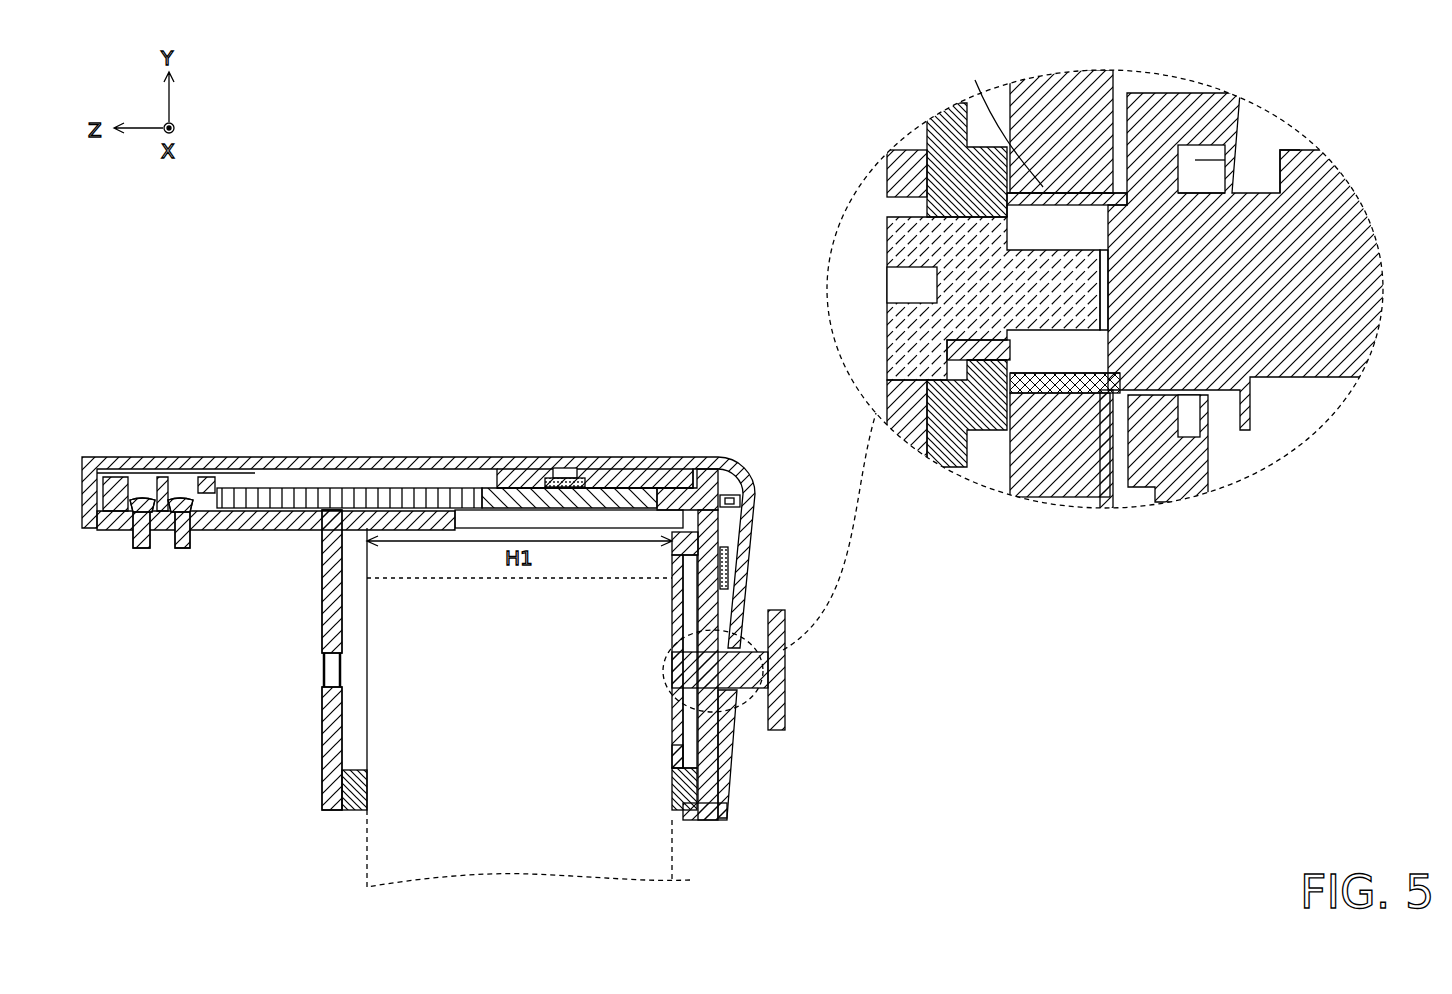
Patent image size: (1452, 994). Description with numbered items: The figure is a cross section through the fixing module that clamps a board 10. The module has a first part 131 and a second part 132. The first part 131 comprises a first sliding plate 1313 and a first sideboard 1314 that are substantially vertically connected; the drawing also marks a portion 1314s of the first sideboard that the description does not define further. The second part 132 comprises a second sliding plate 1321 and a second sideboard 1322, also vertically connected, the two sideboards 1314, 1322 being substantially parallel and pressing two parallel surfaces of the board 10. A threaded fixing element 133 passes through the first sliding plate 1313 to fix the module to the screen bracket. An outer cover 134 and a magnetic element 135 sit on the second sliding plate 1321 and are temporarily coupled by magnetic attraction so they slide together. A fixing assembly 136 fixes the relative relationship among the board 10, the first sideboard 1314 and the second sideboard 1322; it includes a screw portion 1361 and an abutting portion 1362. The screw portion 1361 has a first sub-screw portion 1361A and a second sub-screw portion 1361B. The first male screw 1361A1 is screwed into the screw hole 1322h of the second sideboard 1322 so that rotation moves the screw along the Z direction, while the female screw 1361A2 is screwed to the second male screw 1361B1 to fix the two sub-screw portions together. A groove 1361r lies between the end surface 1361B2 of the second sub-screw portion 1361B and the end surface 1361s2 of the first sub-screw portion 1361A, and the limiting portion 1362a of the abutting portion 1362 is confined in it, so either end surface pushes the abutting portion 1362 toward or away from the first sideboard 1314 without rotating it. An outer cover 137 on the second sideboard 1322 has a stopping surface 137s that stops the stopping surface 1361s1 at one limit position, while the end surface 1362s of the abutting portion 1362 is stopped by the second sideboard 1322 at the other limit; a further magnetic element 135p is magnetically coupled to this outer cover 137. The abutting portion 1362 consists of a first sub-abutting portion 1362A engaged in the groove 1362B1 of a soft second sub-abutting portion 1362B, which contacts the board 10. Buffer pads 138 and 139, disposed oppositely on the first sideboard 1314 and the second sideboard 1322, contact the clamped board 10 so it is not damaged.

The board 10 is at (693, 878).
The first part 131 is at (245, 712).
The second part 132 is at (756, 779).
The fixing element 133 is at (186, 548).
The outer cover 134 is at (646, 470).
The magnetic element 135 is at (564, 478).
The magnetic element 135p is at (727, 565).
The fixing assembly 136 is at (1043, 390).
The outer cover 137 is at (728, 790).
The stopping surface 137s is at (1195, 160).
The buffer pad 138 is at (353, 797).
The buffer pad 139 is at (681, 794).
The first sliding plate 1313 is at (281, 512).
The first sideboard 1314 is at (332, 610).
The slot of vertical plate portion 1314s is at (324, 658).
The second sliding plate 1321 is at (665, 492).
The second sideboard 1322 is at (710, 565).
The screw hole 1322h is at (1066, 213).
The screw portion 1361 is at (1043, 383).
The first sub-screw portion 1361A is at (1108, 319).
The first male screw 1361A1 is at (973, 121).
The female screw 1361A2 is at (960, 140).
The second sub-screw portion 1361B is at (1067, 379).
The second male screw 1361B1 is at (1060, 323).
The end surface 1361B2 is at (983, 363).
The groove 1361r is at (992, 200).
The stopping surface 1361s1 is at (1285, 165).
The end surface 1361s2 is at (985, 400).
The abutting portion 1362 is at (716, 470).
The first sub-abutting portion 1362A is at (678, 714).
The second sub-abutting portion 1362B is at (677, 739).
The groove 1362B1 is at (678, 746).
The limiting portion 1362a is at (962, 240).
The end surface 1362s is at (1043, 413).